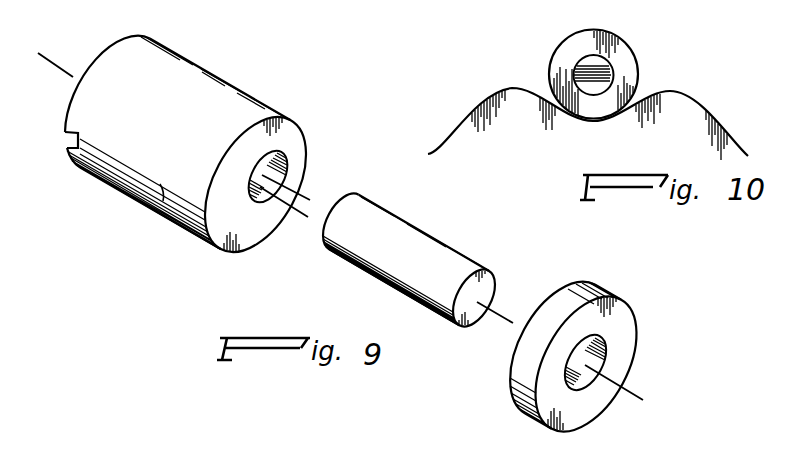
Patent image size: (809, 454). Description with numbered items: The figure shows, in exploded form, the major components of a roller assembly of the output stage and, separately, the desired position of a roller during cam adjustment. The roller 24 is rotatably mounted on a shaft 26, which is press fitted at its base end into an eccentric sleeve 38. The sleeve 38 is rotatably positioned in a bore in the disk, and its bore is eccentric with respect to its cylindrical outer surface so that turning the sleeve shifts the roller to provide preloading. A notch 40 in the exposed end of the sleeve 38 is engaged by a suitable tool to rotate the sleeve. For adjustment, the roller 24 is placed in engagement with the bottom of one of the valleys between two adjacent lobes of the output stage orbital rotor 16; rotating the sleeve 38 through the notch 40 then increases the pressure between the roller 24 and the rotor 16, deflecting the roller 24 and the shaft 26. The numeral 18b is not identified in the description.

In FIG. 9, the eccentric sleeve 38 is at (163, 212).
In FIG. 9, the notch 40 is at (76, 140).
In FIG. 9, the shaft 26 is at (403, 254).
In FIG. 9, the roller 24 is at (571, 409).
In FIG. 10, the roller 24 is at (615, 49).
In FIG. 10, the output stage orbital rotor 16 is at (687, 95).
In FIG. 10, the groove 18b is at (593, 119).